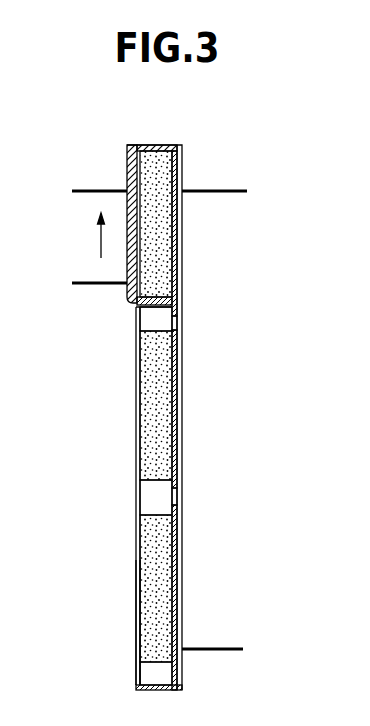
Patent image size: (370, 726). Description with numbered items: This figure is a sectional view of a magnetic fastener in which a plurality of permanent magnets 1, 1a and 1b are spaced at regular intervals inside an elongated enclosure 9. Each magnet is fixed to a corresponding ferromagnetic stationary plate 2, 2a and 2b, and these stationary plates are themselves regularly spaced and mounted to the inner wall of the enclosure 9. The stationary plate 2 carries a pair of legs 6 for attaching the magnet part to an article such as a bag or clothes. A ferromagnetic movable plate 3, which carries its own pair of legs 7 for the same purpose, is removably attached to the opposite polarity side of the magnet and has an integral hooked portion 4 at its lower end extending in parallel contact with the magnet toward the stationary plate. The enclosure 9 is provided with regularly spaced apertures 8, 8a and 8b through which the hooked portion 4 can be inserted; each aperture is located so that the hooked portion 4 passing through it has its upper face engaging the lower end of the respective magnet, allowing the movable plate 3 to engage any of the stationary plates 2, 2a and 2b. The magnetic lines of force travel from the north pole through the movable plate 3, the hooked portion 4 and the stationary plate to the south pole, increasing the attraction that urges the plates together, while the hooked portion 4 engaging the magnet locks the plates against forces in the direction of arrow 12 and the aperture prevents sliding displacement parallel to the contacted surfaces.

The permanent magnet 1 is at (162, 264).
The permanent magnet 1a is at (162, 418).
The permanent magnet 1b is at (160, 587).
The stationary plate 2 is at (176, 232).
The stationary plate 2a is at (175, 376).
The stationary plate 2b is at (175, 543).
The movable plate 3 is at (129, 146).
The hooked portion 4 is at (152, 307).
The legs 6 is at (212, 190).
The legs 7 is at (96, 188).
The aperture 8 is at (136, 308).
The aperture 8a is at (137, 485).
The aperture 8b is at (135, 669).
The elongated enclosure 9 is at (135, 587).
The arrow 12 is at (101, 243).